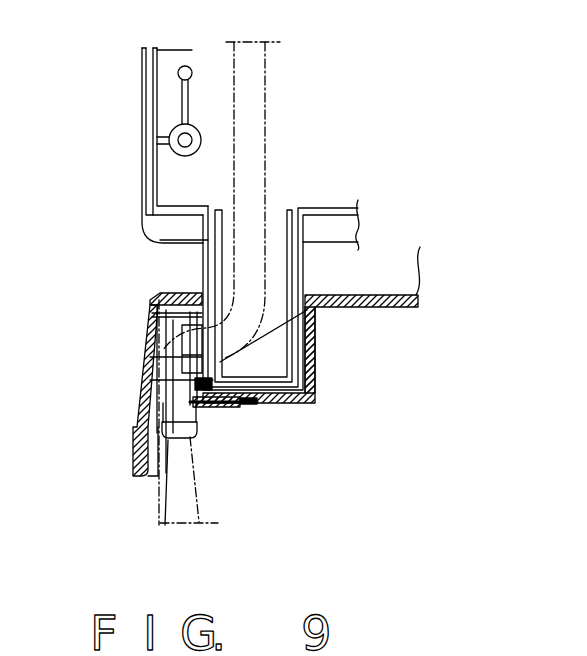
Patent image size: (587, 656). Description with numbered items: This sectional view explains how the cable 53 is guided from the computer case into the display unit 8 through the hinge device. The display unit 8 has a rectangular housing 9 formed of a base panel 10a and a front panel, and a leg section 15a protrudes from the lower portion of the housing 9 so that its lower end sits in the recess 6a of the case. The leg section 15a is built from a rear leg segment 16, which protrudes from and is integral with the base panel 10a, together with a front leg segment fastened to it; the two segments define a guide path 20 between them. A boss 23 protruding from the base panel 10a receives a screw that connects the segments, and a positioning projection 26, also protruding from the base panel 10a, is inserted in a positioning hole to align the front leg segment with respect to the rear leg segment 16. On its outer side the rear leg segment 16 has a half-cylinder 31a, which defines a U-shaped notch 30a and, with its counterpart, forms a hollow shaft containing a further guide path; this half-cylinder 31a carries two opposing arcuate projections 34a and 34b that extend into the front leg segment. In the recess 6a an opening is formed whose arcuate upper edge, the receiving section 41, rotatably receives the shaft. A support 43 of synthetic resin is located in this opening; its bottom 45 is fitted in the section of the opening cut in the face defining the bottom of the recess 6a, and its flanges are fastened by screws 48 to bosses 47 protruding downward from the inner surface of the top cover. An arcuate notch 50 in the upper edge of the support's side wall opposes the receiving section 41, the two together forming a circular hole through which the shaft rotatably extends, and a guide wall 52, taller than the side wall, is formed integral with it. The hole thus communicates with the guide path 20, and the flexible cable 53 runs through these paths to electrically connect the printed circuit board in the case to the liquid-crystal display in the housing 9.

The display unit 8 is at (128, 71).
The housing 9 is at (155, 183).
The positioning projection 26 is at (188, 66).
The boss 23 is at (201, 141).
The cable 53 is at (266, 97).
The rear leg segment 16 is at (208, 252).
The leg section 15a is at (300, 271).
The base panel 10a is at (418, 270).
The guide path 20 is at (314, 336).
The recess 6a is at (284, 368).
The arcuate projection 34a is at (205, 300).
The receiving section 41 is at (152, 298).
The boss 47 is at (150, 320).
The half-cylinder 31a is at (186, 336).
The guide wall 52 is at (186, 375).
The arcuate notch 50 is at (197, 376).
The support 43 is at (150, 444).
The screw 48 is at (157, 474).
The arcuate projection 34b is at (218, 408).
The bottom 45 is at (256, 412).
The U-shaped notch 30a is at (243, 412).